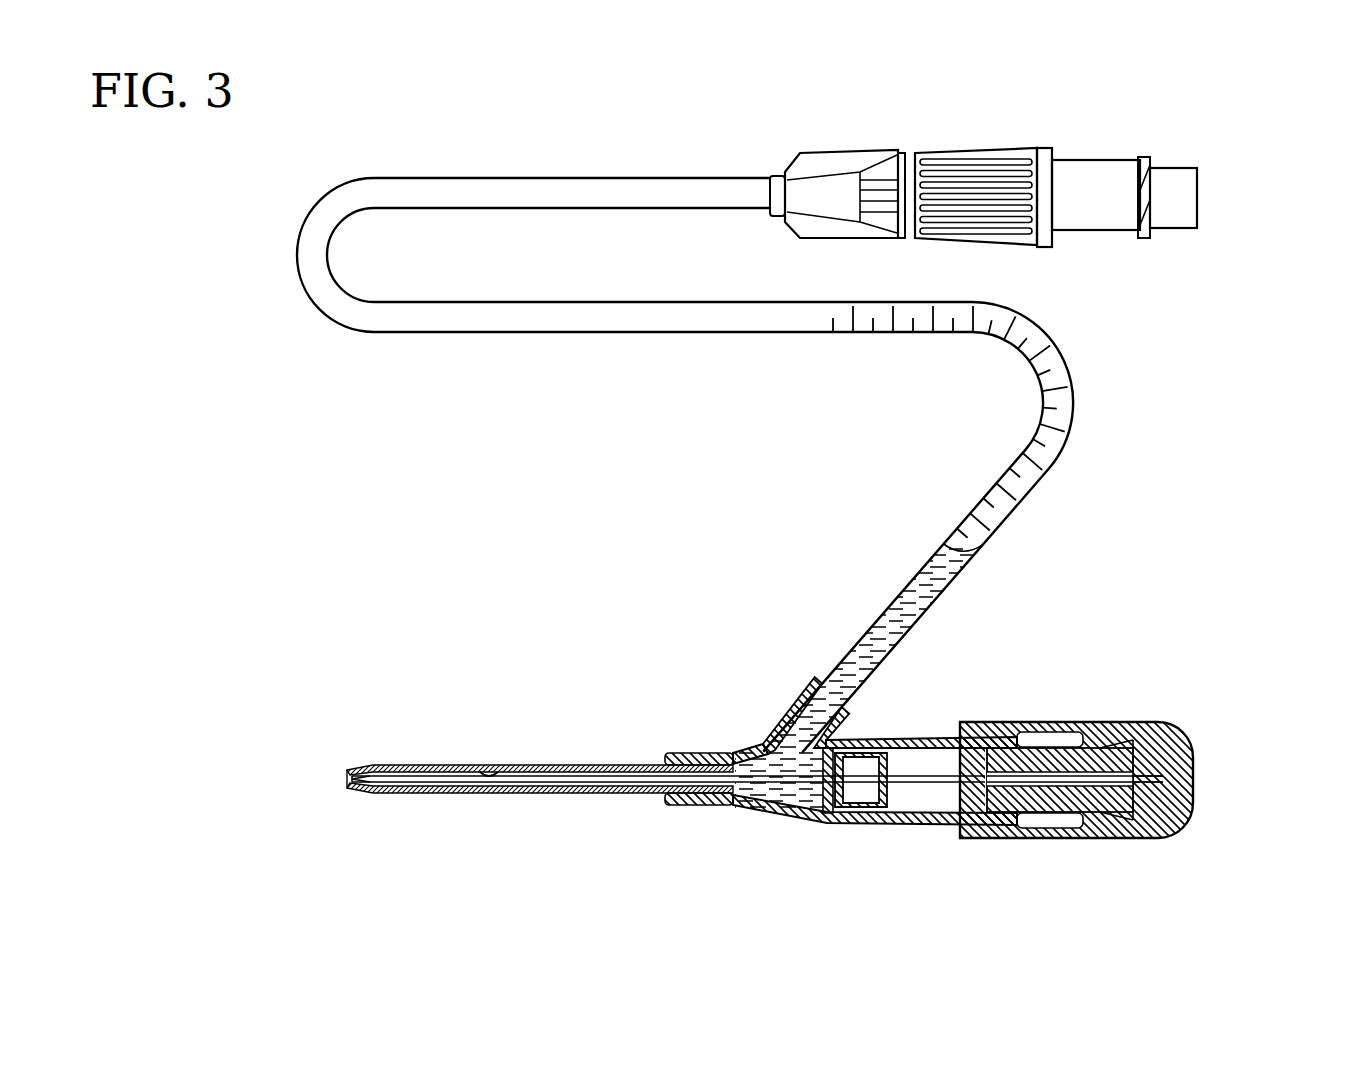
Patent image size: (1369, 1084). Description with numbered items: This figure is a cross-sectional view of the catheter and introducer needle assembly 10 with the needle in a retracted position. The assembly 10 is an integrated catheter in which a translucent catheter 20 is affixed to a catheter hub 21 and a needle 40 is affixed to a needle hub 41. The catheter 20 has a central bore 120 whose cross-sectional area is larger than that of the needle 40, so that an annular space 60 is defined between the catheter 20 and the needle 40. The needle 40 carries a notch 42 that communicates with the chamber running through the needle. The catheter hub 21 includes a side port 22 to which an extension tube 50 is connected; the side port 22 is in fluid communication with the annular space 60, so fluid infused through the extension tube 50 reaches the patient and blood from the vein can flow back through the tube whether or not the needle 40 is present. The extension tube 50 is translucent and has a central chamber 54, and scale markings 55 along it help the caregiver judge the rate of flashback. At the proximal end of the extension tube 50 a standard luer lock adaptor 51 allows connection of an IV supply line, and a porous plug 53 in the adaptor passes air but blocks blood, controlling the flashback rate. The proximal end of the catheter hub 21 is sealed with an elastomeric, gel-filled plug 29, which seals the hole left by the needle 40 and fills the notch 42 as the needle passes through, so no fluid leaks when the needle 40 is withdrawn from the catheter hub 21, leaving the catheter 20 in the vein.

The catheter and introducer needle assembly 10 is at (418, 508).
The catheter 20 is at (592, 767).
The catheter hub 21 is at (758, 818).
The side port 22 is at (787, 723).
The elastomeric plug 29 is at (860, 790).
The needle 40 is at (443, 795).
The needle hub 41 is at (993, 837).
The notch 42 is at (488, 767).
The extension tube 50 is at (557, 333).
The luer lock adaptor 51 is at (1143, 157).
The plug 53 is at (1183, 192).
The central chamber 54 is at (920, 613).
The scale markings 55 is at (897, 330).
The annular space 60 is at (537, 793).
The central bore 120 is at (358, 778).